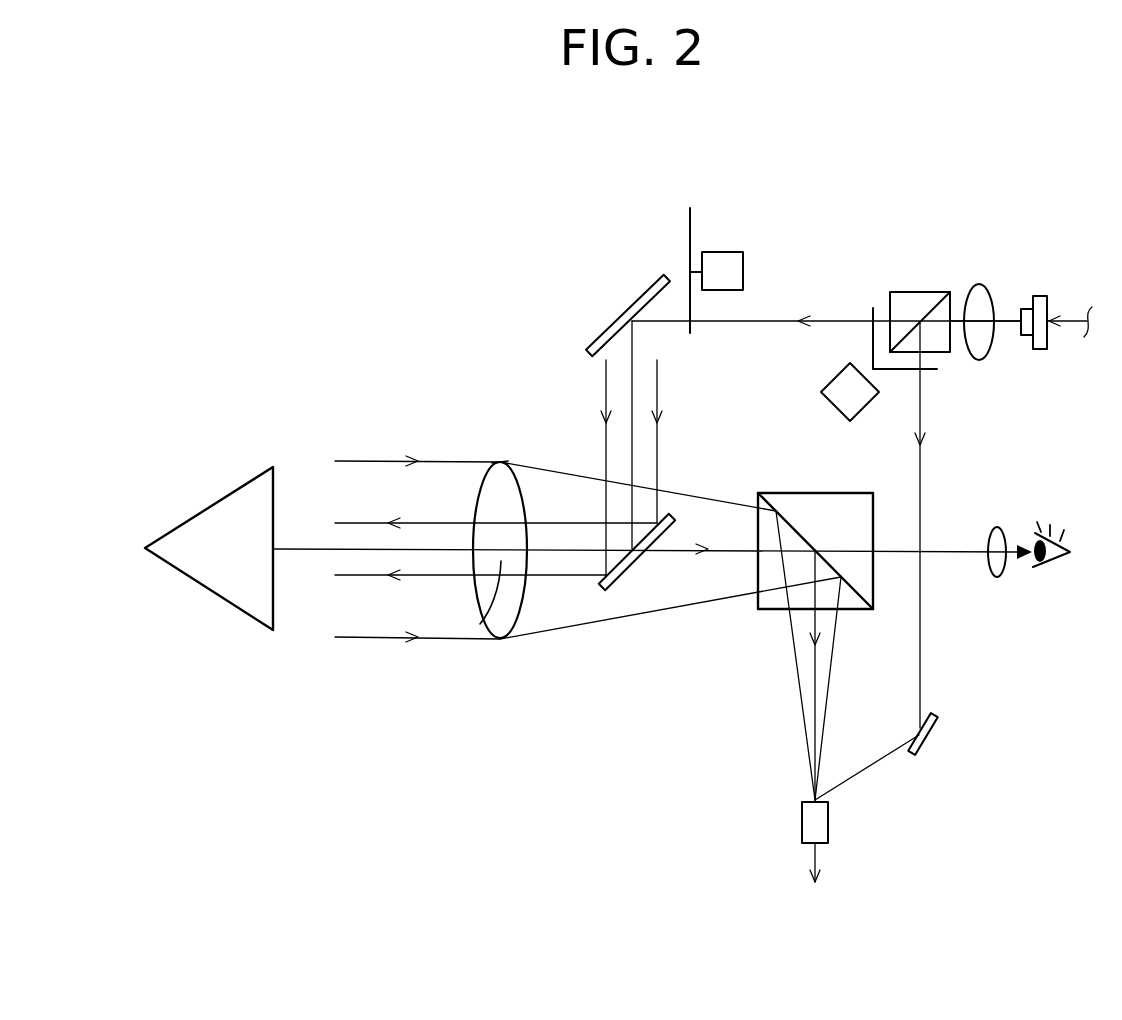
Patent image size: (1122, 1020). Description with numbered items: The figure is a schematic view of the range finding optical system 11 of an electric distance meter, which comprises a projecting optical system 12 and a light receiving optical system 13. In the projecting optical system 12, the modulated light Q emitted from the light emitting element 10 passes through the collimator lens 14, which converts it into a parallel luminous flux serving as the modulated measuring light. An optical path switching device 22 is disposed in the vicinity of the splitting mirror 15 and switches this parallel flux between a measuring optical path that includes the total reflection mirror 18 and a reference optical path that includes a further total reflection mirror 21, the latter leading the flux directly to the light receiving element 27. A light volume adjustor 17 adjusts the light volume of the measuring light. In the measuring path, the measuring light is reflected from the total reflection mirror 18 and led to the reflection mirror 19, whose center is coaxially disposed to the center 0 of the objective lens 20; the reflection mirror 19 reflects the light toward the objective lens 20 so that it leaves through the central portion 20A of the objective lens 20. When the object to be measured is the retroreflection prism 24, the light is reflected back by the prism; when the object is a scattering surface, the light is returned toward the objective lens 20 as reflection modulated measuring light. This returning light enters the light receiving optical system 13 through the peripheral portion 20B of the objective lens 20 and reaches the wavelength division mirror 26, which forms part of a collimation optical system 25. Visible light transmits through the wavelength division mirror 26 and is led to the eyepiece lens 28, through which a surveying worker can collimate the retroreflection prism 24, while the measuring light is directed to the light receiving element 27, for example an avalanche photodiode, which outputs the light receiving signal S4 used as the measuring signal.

The light emitting element 10 is at (1041, 350).
The range finding optical system 11 is at (573, 298).
The projecting optical system 12 is at (845, 250).
The light receiving optical system 13 is at (725, 660).
The collimator lens 14 is at (974, 289).
The splitting mirror 15 is at (917, 293).
The light volume adjustor 17 is at (723, 258).
The total reflection mirror 18 is at (640, 293).
The reflection mirror 19 is at (627, 573).
The objective lens 20 is at (501, 627).
The central portion 20A is at (483, 622).
The peripheral portion 20B is at (500, 464).
The total reflection mirror 21 is at (937, 718).
The optical path switching device 22 is at (822, 392).
The retroreflection prism 24 is at (215, 585).
The collimation optical system 25 is at (966, 515).
The wavelength division mirror 26 is at (862, 500).
The light receiving element 27 is at (823, 823).
The eyepiece lens 28 is at (998, 578).
The modulated light Q is at (1010, 318).
The center of the objective lens 0 is at (715, 553).
The light receiving signal S4 is at (814, 907).